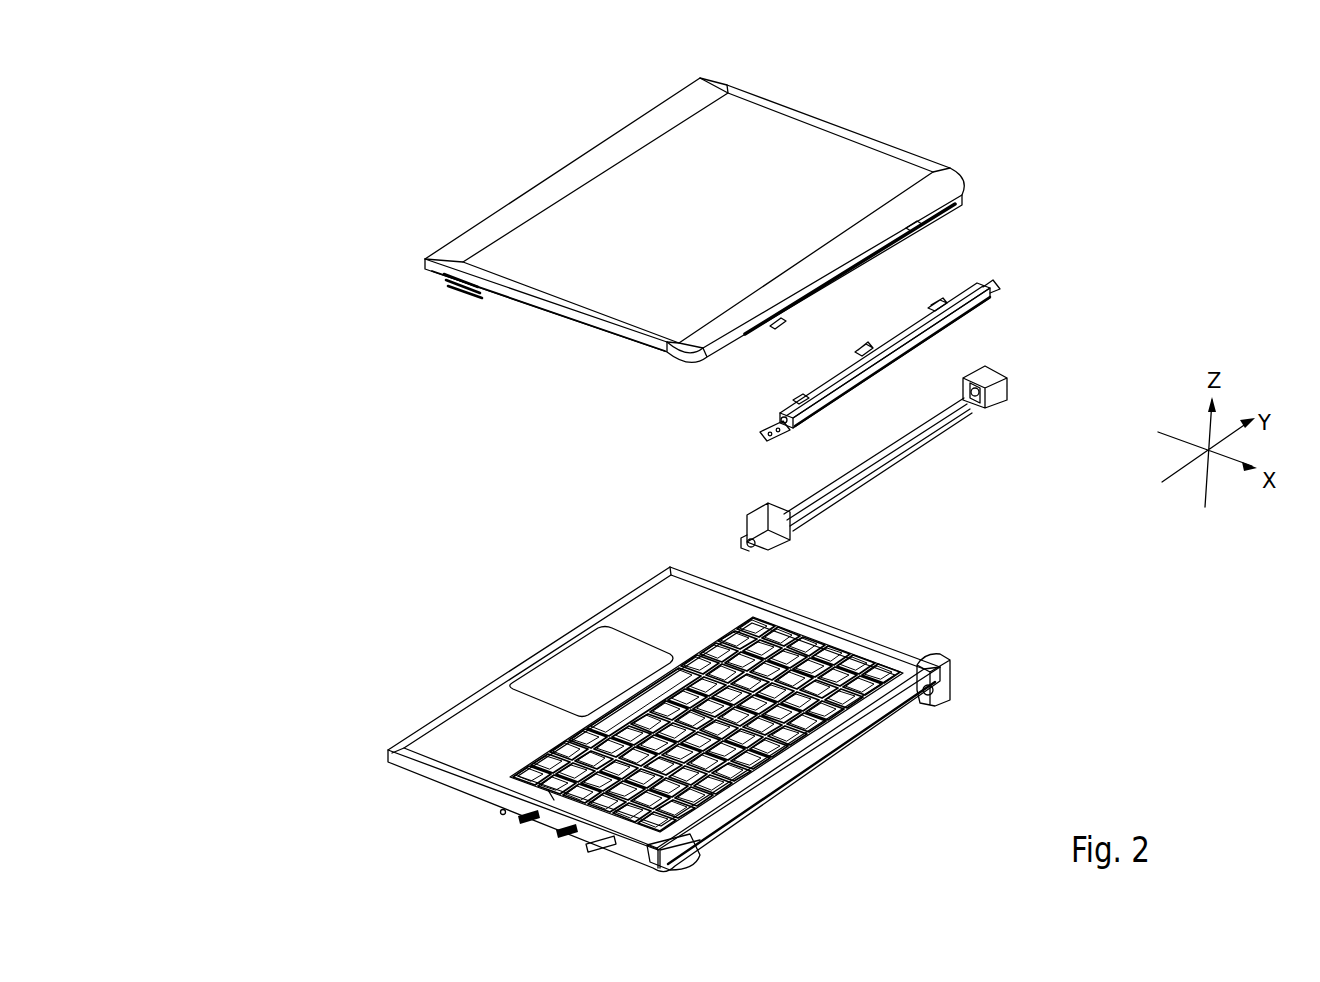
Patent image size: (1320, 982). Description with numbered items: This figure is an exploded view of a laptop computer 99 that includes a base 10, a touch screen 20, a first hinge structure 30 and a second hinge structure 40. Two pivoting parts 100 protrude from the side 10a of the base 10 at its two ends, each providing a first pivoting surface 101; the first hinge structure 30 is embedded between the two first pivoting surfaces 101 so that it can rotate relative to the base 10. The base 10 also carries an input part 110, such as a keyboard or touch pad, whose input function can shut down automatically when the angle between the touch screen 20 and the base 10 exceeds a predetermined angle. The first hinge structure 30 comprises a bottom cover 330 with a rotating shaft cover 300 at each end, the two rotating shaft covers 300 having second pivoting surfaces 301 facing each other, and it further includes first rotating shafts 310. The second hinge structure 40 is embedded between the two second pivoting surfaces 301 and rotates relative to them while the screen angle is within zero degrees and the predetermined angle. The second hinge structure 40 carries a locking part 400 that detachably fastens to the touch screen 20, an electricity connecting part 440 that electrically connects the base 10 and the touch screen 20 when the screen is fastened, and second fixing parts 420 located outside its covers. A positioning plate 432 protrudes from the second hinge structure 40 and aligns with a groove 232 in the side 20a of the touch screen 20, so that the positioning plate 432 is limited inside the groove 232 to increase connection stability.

The laptop computer 99 is at (306, 94).
The touch screen 20 is at (521, 185).
The side of the touch screen 20a is at (848, 268).
The groove 232 is at (913, 230).
The second hinge structure 40 is at (1013, 280).
The locking part 400 is at (940, 298).
The electricity connecting part 440 is at (856, 351).
The positioning plate 432 is at (797, 398).
The second fixing part 420 is at (760, 432).
The first hinge structure 30 is at (875, 495).
The rotating shaft cover 300 is at (780, 547).
The second pivoting surface 301 is at (974, 408).
The first rotating shaft 310 is at (755, 535).
The bottom cover 330 is at (816, 518).
The base 10 is at (476, 802).
The side of the base 10a is at (800, 778).
The pivoting part 100 is at (953, 690).
The first pivoting surface 101 is at (933, 700).
The input part 110 is at (568, 782).